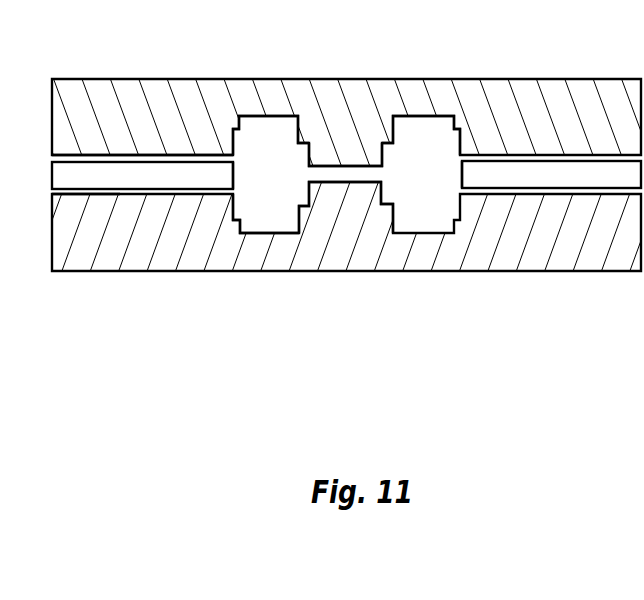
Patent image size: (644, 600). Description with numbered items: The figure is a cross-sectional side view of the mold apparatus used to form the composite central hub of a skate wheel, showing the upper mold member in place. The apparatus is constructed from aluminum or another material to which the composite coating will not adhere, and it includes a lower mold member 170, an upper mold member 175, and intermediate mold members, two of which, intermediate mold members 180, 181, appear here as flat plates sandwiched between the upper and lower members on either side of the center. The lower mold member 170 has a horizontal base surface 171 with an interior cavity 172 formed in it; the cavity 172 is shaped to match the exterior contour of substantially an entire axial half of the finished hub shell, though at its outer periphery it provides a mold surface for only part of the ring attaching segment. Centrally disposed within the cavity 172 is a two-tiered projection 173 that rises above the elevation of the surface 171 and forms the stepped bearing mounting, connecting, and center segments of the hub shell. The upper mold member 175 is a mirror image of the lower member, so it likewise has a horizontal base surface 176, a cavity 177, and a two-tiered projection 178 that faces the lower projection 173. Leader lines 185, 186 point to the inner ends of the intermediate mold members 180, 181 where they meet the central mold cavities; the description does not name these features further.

The lower mold member 170 is at (165, 248).
The horizontal base surface 171 is at (87, 196).
The interior cavity 172 is at (252, 226).
The two-tiered projection 173 is at (312, 195).
The upper mold member 175 is at (122, 95).
The horizontal base surface 176 is at (175, 154).
The cavity 177 is at (251, 150).
The two-tiered projection 178 is at (310, 164).
The intermediate mold member 180 is at (539, 185).
The intermediate mold member 181 is at (116, 186).
The inner end of right insert 185 is at (456, 177).
The inner end of left insert 186 is at (233, 164).